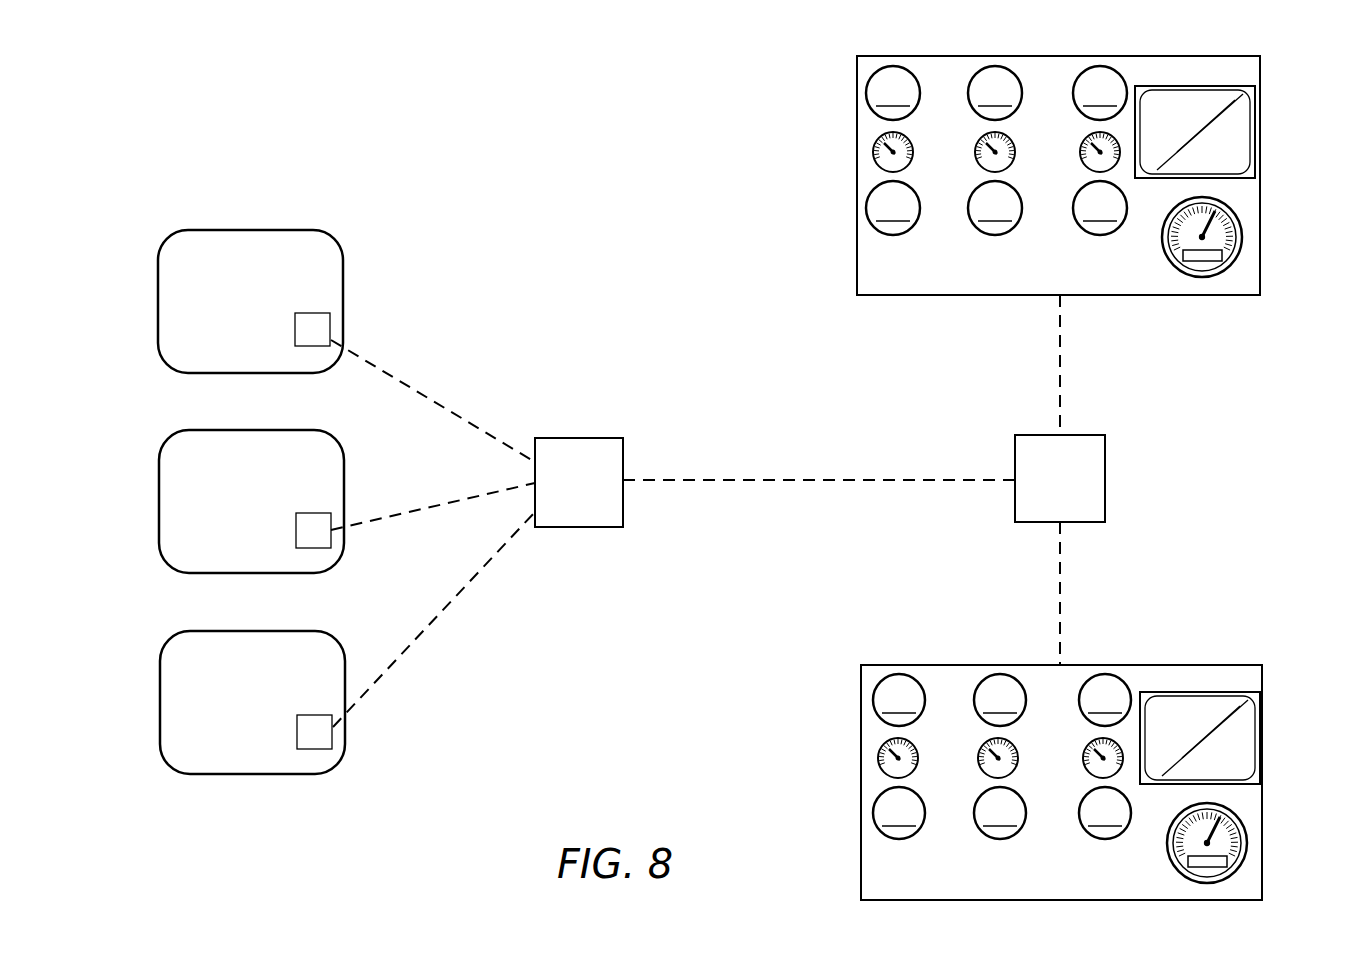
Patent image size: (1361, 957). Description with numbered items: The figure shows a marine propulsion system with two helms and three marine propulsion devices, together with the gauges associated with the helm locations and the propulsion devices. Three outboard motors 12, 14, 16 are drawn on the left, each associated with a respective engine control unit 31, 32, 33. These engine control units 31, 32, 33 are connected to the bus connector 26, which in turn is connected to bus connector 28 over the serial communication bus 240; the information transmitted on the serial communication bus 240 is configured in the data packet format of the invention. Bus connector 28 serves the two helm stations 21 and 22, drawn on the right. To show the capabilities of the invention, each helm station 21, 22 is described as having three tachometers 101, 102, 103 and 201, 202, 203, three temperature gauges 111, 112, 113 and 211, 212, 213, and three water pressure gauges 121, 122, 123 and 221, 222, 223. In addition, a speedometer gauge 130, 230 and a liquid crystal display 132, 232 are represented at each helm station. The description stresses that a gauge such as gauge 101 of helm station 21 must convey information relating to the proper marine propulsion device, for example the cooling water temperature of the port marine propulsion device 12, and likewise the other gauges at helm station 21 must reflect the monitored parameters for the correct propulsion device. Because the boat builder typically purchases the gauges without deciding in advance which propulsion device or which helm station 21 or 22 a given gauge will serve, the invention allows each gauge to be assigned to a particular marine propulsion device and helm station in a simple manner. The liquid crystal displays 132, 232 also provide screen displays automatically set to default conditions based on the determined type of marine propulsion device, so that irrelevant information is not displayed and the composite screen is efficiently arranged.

The outboard motor 12 is at (255, 238).
The outboard motor 14 is at (255, 438).
The outboard motor 16 is at (257, 640).
The engine control unit 31 is at (323, 322).
The engine control unit 32 is at (325, 538).
The engine control unit 33 is at (323, 738).
The bus connector 26 is at (590, 438).
The serial communication bus 240 is at (775, 480).
The bus connector 28 is at (1077, 524).
The helm station 21 is at (1268, 108).
The helm station 22 is at (1268, 713).
The tachometer 101 is at (893, 93).
The tachometer 102 is at (995, 93).
The tachometer 103 is at (1100, 93).
The temperature gauge 111 is at (893, 208).
The temperature gauge 112 is at (995, 208).
The temperature gauge 113 is at (1100, 208).
The water pressure gauge 121 is at (906, 140).
The water pressure gauge 122 is at (1008, 166).
The water pressure gauge 123 is at (1086, 143).
The speedometer gauge 130 is at (1163, 258).
The liquid crystal display 132 is at (1157, 98).
The tachometer 201 is at (899, 700).
The tachometer 202 is at (1000, 700).
The tachometer 203 is at (1105, 700).
The temperature gauge 211 is at (899, 813).
The temperature gauge 212 is at (1000, 813).
The temperature gauge 213 is at (1105, 813).
The water pressure gauge 221 is at (910, 747).
The water pressure gauge 222 is at (1012, 773).
The water pressure gauge 223 is at (1090, 750).
The speedometer gauge 230 is at (1168, 863).
The liquid crystal display 232 is at (1162, 705).